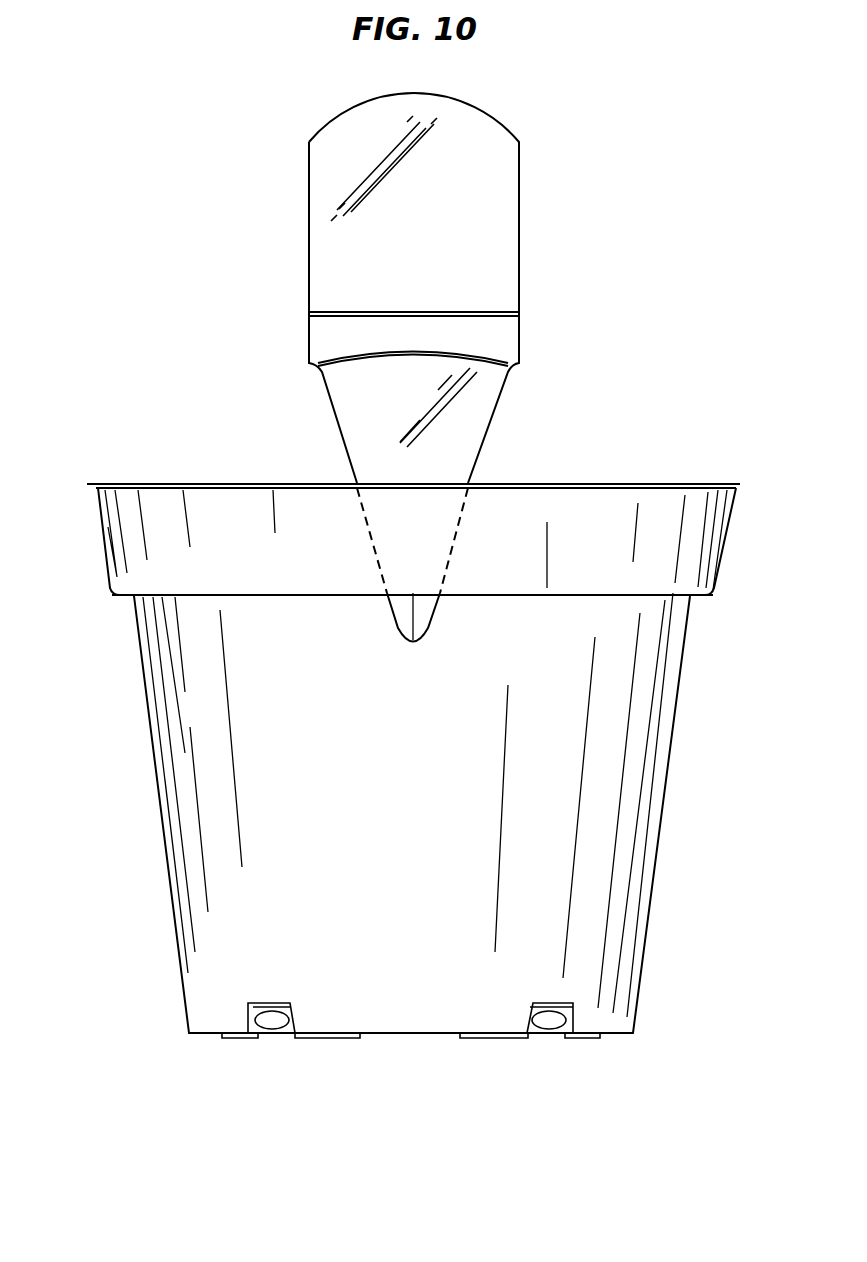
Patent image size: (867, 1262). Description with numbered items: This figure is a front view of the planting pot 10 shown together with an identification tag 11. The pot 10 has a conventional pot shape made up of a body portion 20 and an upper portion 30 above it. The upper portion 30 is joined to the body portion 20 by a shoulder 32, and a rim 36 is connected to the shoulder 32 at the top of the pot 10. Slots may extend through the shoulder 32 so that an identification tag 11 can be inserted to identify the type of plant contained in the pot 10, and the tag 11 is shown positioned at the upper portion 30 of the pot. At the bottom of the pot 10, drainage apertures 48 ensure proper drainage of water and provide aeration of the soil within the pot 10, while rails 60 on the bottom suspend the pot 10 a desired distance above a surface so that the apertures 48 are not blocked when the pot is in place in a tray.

The planting pot 10 is at (720, 427).
The identification tag 11 is at (518, 216).
The body portion 20 is at (700, 607).
The upper portion 30 is at (419, 559).
The shoulder 32 is at (118, 596).
The rim 36 is at (103, 532).
The drainage apertures 48 is at (270, 1022).
The rails 60 is at (598, 1063).